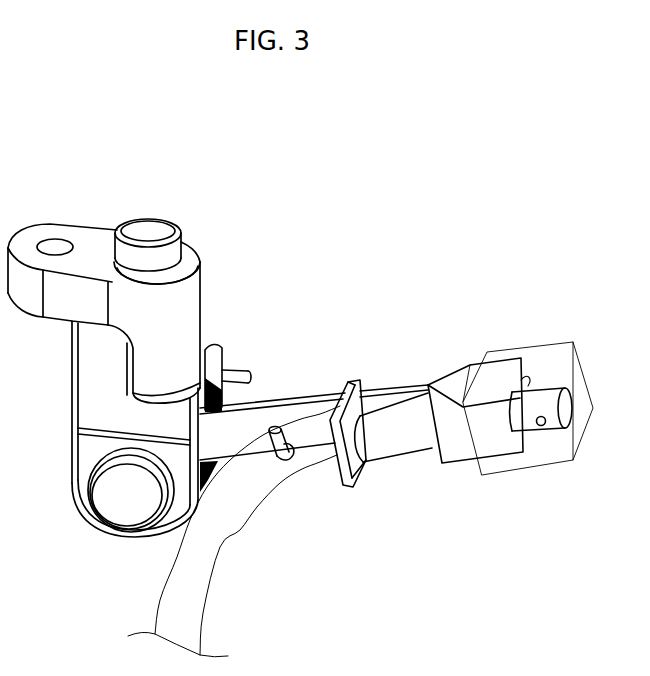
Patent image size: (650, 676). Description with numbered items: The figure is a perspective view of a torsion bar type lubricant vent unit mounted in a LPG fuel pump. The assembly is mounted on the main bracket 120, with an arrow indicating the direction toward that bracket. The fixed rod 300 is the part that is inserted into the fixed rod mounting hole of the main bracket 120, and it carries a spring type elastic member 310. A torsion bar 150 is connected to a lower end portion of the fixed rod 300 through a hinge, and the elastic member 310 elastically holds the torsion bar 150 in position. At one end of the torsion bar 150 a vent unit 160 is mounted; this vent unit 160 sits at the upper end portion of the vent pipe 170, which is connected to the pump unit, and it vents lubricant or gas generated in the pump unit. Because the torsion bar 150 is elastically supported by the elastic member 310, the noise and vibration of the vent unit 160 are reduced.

The main bracket 120 is at (148, 205).
The fixed rod 300 is at (194, 287).
The elastic member 310 is at (249, 366).
The torsion bar 150 is at (322, 403).
The vent unit 160 is at (527, 488).
The vent pipe 170 is at (220, 547).